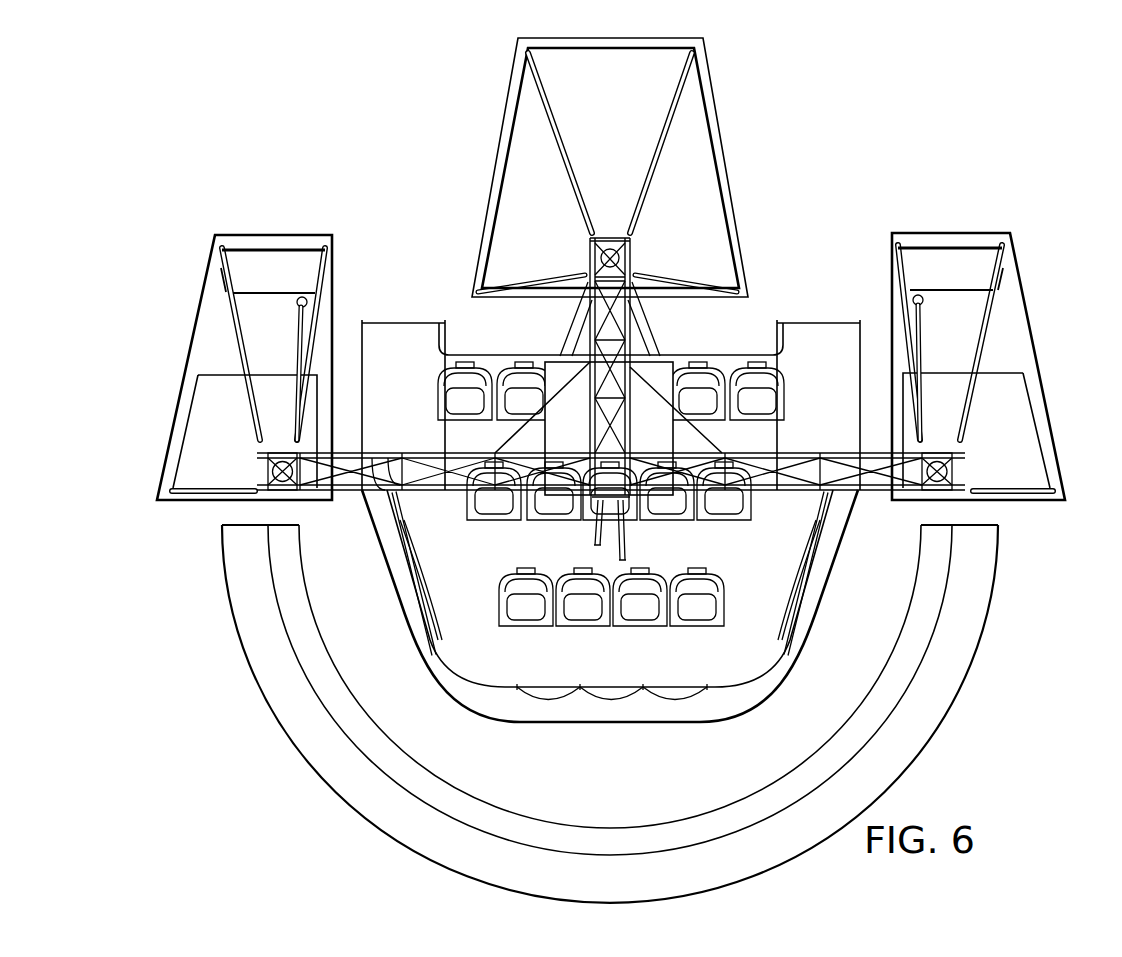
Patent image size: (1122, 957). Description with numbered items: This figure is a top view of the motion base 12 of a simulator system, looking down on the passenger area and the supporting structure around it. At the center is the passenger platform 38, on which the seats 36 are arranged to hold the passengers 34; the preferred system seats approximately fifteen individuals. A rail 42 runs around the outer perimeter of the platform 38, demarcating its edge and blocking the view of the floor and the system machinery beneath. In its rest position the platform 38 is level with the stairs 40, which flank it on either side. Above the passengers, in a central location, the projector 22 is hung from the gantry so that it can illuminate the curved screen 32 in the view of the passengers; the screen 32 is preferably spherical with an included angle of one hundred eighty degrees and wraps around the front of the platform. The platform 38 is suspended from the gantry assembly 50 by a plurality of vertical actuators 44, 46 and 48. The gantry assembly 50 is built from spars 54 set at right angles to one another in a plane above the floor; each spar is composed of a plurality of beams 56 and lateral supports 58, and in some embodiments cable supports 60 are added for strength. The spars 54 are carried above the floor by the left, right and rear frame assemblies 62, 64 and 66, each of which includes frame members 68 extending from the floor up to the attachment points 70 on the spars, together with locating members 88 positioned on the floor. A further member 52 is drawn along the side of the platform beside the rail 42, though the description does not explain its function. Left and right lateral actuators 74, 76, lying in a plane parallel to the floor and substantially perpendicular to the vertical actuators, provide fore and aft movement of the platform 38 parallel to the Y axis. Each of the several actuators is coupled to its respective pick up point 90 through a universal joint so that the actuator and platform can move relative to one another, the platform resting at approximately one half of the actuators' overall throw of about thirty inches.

The motion base 12 is at (332, 150).
The projector 22 is at (668, 428).
The screen 32 is at (980, 603).
The passengers 34 is at (620, 528).
The seats 36 is at (685, 615).
The platform 38 is at (758, 618).
The stairs 40 is at (415, 334).
The rail 42 is at (412, 575).
The vertical actuator 44 is at (950, 466).
The vertical actuator 46 is at (617, 263).
The vertical actuator 48 is at (270, 466).
The gantry assembly 50 is at (668, 344).
The body strut 52 is at (457, 498).
The spars 54 is at (572, 338).
The beams 56 is at (568, 485).
The lateral supports 58 is at (615, 282).
The cable supports 60 is at (430, 470).
The left frame assembly 62 is at (238, 392).
The right frame assembly 64 is at (983, 388).
The rear frame assembly 66 is at (673, 155).
The frame members 68 is at (648, 167).
The attachment points 70 is at (585, 255).
The left lateral actuator 74 is at (300, 323).
The right lateral actuator 76 is at (938, 335).
The locating members 88 is at (748, 228).
The pick up points 90 is at (578, 313).